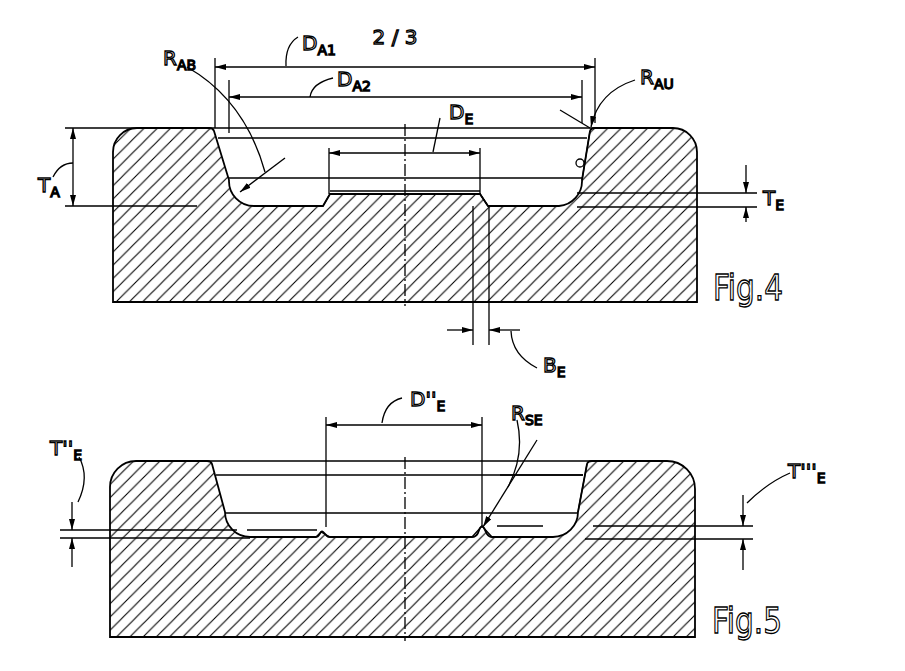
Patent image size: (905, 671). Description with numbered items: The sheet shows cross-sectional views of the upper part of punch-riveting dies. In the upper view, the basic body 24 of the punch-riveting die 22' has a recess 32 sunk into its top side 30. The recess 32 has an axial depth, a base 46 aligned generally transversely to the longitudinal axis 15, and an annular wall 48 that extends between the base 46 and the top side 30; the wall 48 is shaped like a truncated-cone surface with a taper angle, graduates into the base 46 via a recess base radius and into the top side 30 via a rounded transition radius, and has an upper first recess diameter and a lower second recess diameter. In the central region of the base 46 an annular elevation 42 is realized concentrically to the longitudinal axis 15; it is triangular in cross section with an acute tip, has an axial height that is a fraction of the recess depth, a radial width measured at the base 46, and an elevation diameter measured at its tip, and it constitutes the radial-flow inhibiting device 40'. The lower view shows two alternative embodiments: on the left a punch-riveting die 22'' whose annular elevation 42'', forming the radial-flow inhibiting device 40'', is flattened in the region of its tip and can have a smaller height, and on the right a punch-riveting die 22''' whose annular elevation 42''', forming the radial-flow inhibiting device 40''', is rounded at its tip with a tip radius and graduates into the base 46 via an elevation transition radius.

In FIG. 4, the basic body 24 is at (153, 267).
In FIG. 5, the basic body 24 is at (162, 603).
In FIG. 4, the top side 30 is at (170, 127).
In FIG. 4, the base 46 is at (300, 203).
In FIG. 4, the radial-flow inhibiting device 40' is at (402, 111).
In FIG. 4, the annular elevation 42 is at (497, 116).
In FIG. 4, the recess 32 is at (530, 160).
In FIG. 5, the recess 32 is at (235, 487).
In FIG. 4, the annular wall 48 is at (583, 155).
In FIG. 4, the longitudinal axis 15 is at (403, 268).
In FIG. 4, the punch-riveting die 22' is at (694, 78).
In FIG. 5, the punch-riveting die 22'' is at (157, 396).
In FIG. 5, the radial-flow inhibiting device 40'' is at (399, 430).
In FIG. 5, the annular elevation 42'' is at (330, 450).
In FIG. 5, the annular elevation 42''' is at (539, 466).
In FIG. 5, the radial-flow inhibiting device 40''' is at (595, 441).
In FIG. 5, the punch-riveting die 22''' is at (710, 417).